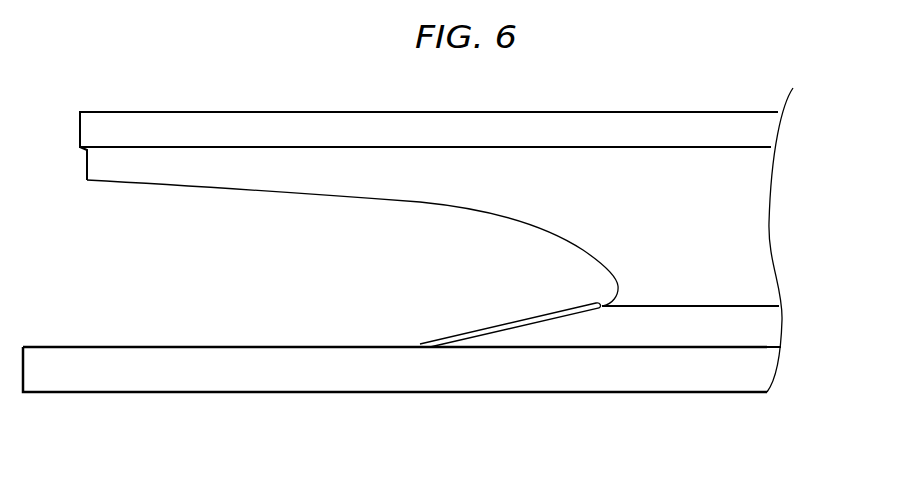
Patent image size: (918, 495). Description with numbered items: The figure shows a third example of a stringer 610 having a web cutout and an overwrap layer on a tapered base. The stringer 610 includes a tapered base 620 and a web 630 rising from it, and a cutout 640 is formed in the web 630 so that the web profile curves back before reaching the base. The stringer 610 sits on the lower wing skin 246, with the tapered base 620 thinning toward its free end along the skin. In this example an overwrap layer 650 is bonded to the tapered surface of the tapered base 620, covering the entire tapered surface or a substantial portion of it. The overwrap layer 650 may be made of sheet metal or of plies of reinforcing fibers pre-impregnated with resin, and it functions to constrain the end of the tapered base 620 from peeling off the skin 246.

The stringer 610 is at (714, 111).
The tapered base 620 is at (781, 325).
The web 630 is at (771, 224).
The cutout 640 is at (588, 250).
The overwrap layer 650 is at (488, 328).
The lower wing skin 246 is at (380, 393).